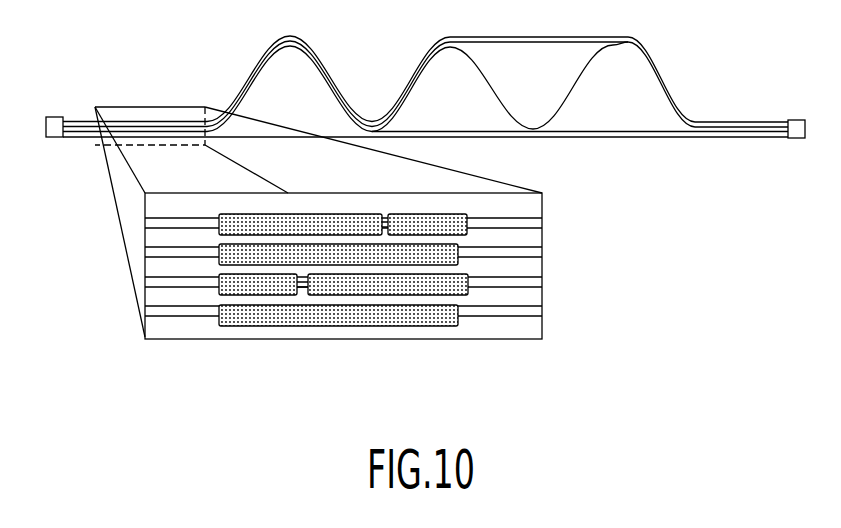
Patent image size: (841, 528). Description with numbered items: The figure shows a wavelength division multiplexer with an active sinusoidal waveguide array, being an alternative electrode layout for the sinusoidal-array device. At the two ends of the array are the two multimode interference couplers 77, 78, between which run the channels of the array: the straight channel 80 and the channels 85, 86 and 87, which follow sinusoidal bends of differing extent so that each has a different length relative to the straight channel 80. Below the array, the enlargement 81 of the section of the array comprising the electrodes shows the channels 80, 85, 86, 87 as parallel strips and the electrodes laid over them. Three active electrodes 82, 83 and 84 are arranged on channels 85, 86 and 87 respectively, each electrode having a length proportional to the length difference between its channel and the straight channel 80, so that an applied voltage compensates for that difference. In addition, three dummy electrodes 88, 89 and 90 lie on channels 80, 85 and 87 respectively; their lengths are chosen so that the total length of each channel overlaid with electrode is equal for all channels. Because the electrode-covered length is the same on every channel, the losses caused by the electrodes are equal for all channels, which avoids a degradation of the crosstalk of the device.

The MMI coupler 77 is at (53, 125).
The MMI coupler 78 is at (792, 128).
The straight channel 80 is at (145, 310).
The enlargement 81 is at (178, 340).
The electrode 82 is at (284, 285).
The electrode 83 is at (337, 255).
The electrode 84 is at (258, 225).
The channel 85 is at (145, 282).
The channel 86 is at (145, 250).
The channel 87 is at (145, 223).
The dummy electrode 88 is at (395, 327).
The dummy electrode 89 is at (428, 288).
The dummy electrode 90 is at (463, 235).